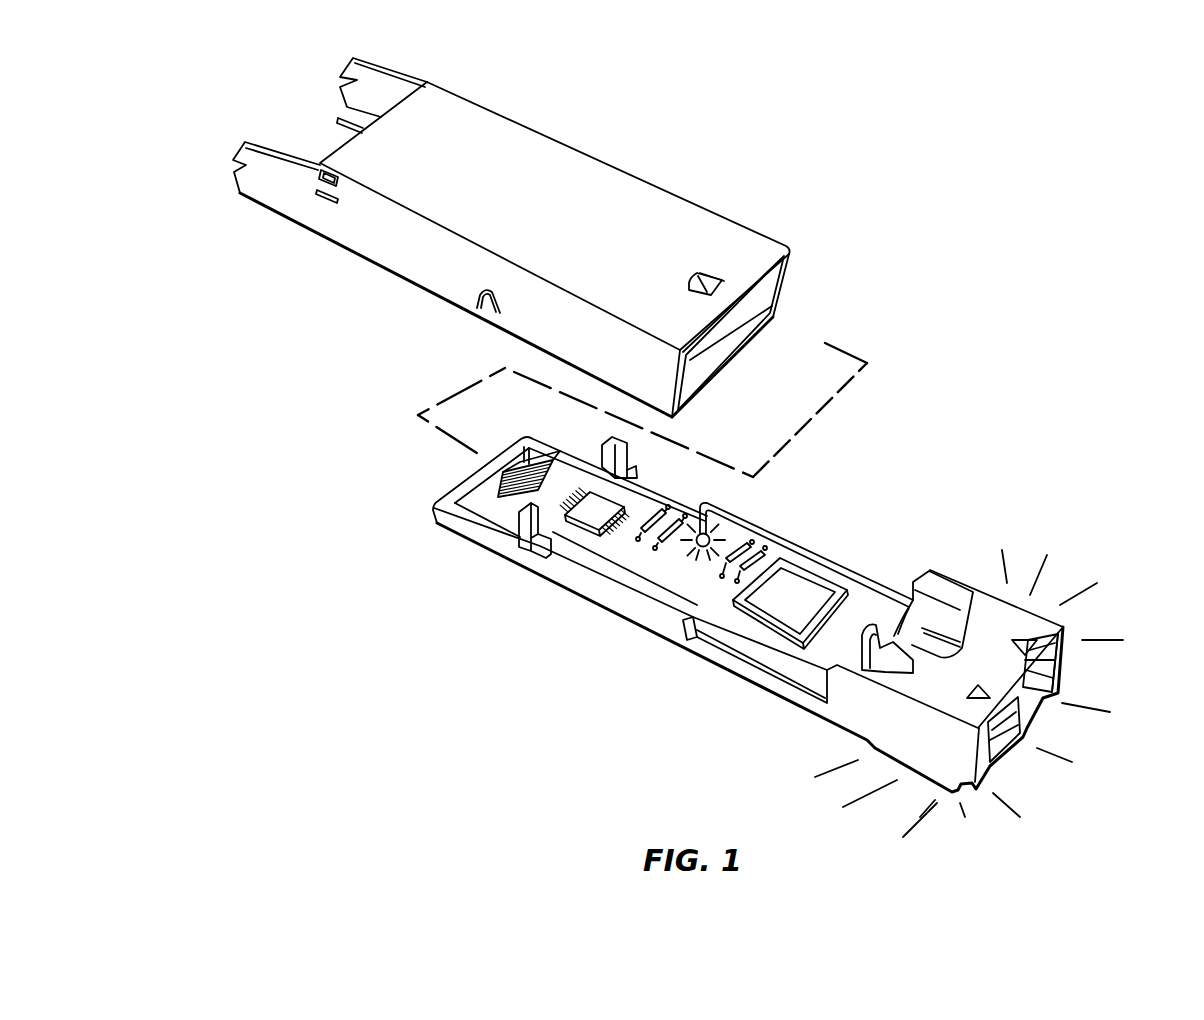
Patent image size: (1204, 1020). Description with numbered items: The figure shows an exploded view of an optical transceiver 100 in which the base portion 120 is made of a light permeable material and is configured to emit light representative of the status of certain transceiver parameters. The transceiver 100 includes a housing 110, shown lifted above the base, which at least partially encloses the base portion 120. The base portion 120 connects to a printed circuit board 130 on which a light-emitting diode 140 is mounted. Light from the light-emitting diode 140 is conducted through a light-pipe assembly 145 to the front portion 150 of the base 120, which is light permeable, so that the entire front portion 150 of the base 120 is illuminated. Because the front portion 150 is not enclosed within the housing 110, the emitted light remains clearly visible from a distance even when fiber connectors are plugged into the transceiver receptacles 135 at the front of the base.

The optical transceiver 100 is at (387, 687).
The housing 110 is at (613, 150).
The base portion 120 is at (708, 667).
The printed circuit board 130 is at (627, 560).
The transceiver receptacles 135 is at (1062, 697).
The light-emitting diode 140 is at (690, 553).
The light-pipe assembly 145 is at (872, 570).
The front portion 150 is at (915, 778).